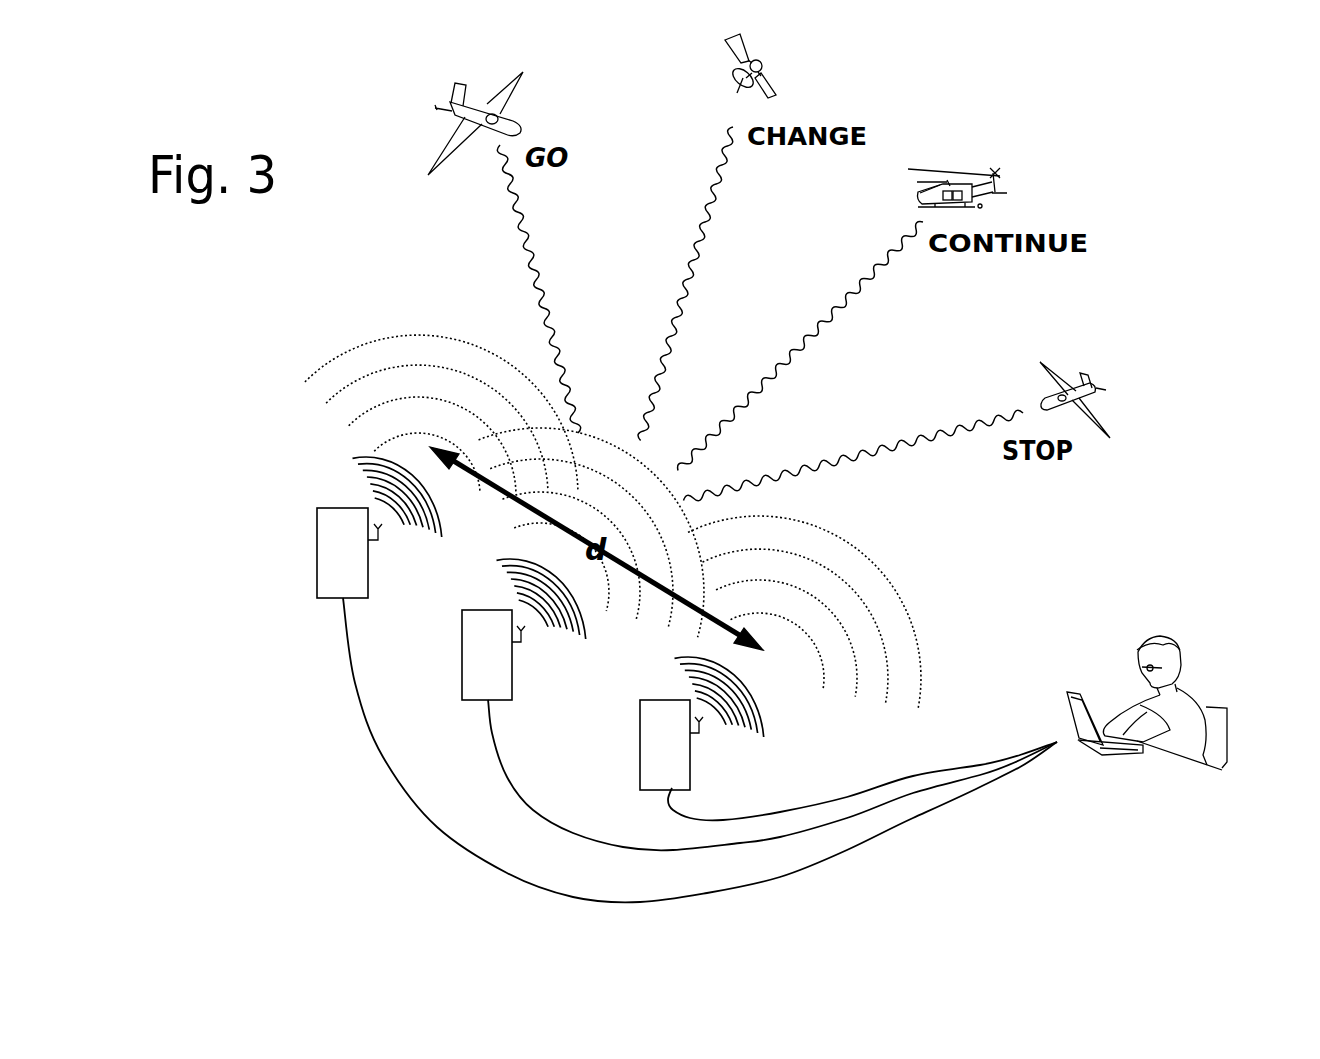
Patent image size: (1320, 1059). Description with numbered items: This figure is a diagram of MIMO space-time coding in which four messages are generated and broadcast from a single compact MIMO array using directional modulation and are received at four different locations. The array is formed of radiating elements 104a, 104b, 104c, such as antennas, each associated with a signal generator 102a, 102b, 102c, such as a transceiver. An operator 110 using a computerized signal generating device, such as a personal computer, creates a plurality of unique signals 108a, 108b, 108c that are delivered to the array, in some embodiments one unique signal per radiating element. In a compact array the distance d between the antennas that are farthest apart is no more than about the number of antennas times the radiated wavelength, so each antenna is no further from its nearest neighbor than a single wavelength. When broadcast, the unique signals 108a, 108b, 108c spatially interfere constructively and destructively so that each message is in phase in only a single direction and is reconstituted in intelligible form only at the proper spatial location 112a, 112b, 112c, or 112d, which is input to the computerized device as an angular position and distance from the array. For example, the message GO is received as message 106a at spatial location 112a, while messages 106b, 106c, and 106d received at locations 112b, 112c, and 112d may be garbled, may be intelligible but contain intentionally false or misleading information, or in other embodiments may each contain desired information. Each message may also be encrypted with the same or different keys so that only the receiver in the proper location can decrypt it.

The signal generator 102a is at (342, 553).
The signal generator 102b is at (487, 655).
The signal generator 102c is at (665, 745).
The radiating element 104a is at (397, 520).
The radiating element 104b is at (541, 621).
The radiating element 104c is at (719, 716).
The message 106a is at (510, 289).
The message 106b is at (665, 284).
The message 106c is at (800, 346).
The message 106d is at (853, 455).
The unique signal 108a is at (441, 414).
The unique signal 108b is at (591, 532).
The unique signal 108c is at (804, 612).
The operator 110 is at (1147, 717).
The spatial location 112a is at (456, 123).
The spatial location 112b is at (774, 58).
The spatial location 112c is at (996, 179).
The spatial location 112d is at (1112, 400).